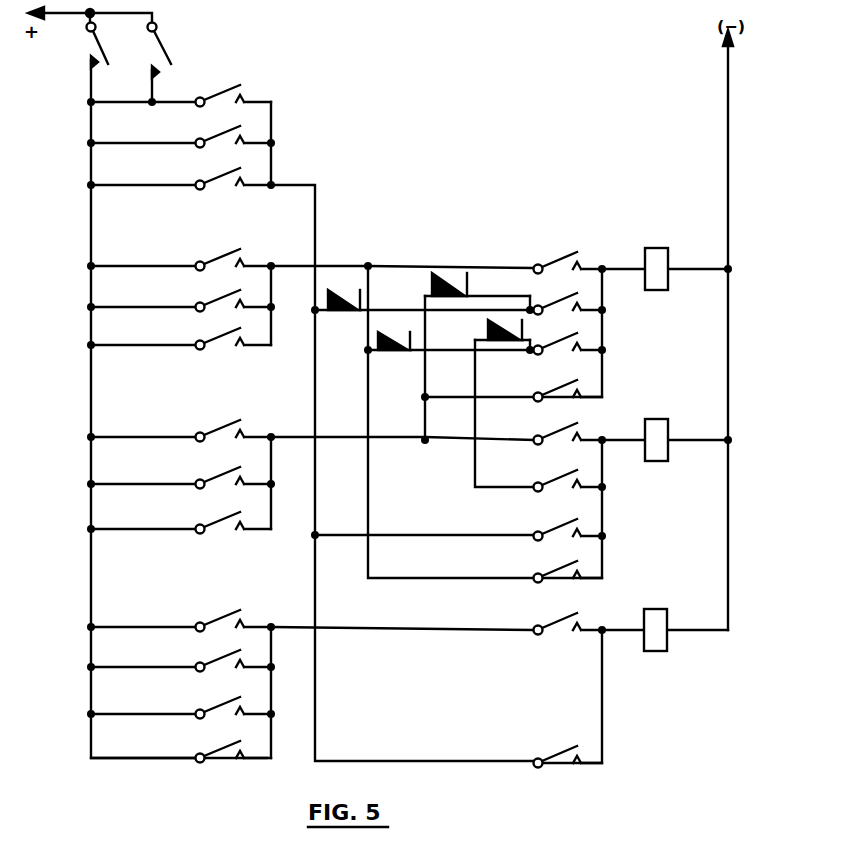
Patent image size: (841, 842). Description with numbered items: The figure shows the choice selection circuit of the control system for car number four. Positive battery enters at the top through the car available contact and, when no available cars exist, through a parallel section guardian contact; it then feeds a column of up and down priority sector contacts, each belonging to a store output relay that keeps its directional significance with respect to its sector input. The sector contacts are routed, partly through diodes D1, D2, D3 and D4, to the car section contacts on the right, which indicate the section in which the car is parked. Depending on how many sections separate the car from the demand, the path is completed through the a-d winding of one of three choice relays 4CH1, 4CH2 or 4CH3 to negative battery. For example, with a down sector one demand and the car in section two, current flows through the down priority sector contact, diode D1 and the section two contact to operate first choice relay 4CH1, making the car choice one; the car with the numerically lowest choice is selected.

The diode D1 is at (422, 291).
The diode D2 is at (477, 284).
The diode D3 is at (449, 332).
The diode D4 is at (502, 328).
The first choice relay 4CH1 is at (665, 255).
The second choice relay 4CH2 is at (665, 424).
The third choice relay 4CH3 is at (665, 616).